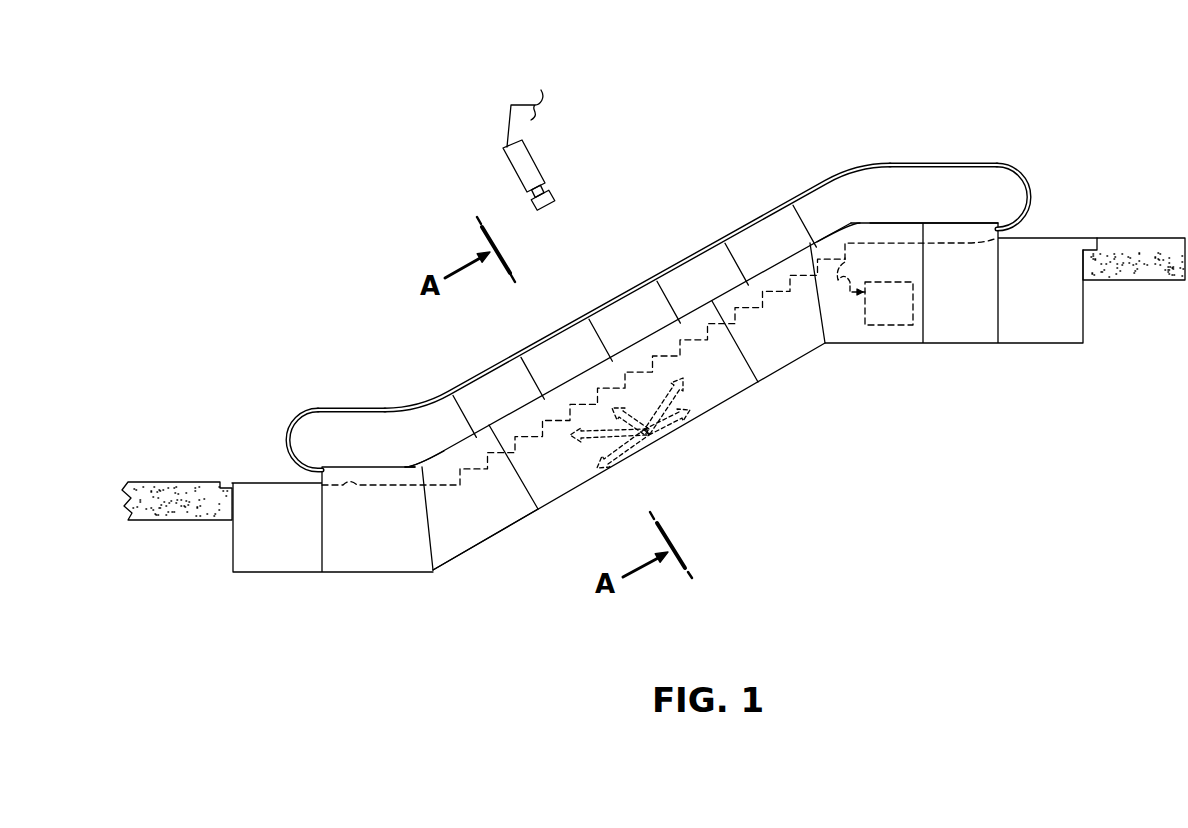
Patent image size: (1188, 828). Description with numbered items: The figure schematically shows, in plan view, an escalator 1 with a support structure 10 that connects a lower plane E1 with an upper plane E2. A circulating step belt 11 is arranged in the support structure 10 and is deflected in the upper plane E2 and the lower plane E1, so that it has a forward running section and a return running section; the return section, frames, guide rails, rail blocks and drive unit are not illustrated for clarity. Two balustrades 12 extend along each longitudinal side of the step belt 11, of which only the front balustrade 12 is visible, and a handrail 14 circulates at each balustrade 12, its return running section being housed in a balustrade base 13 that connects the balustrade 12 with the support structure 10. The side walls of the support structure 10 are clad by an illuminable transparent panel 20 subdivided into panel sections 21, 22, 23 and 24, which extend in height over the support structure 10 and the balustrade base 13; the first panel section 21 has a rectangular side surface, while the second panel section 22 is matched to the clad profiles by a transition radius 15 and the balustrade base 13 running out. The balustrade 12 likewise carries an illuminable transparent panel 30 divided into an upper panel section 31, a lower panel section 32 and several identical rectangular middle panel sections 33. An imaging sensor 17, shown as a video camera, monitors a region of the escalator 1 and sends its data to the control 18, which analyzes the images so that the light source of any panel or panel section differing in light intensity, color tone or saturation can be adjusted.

The escalator 1 is at (658, 125).
The support structure 10 is at (670, 440).
The step belt 11 is at (473, 462).
The balustrade 12 is at (645, 261).
The balustrade base 13 is at (968, 219).
The handrail 14 is at (1013, 168).
The transition radius 15 is at (843, 219).
The imaging sensor 17 is at (517, 177).
The control 18 is at (893, 315).
The illuminable transparent panel 20 is at (502, 477).
The first panel section 21 is at (732, 372).
The second panel section 22 is at (838, 327).
The panel section 23 is at (545, 482).
The panel section 24 is at (343, 475).
The illuminable transparent panel 30 is at (328, 433).
The upper panel section 31 is at (900, 187).
The lower panel section 32 is at (358, 425).
The middle panel section 33 is at (507, 385).
The lower plane E1 is at (177, 485).
The upper plane E2 is at (1134, 244).